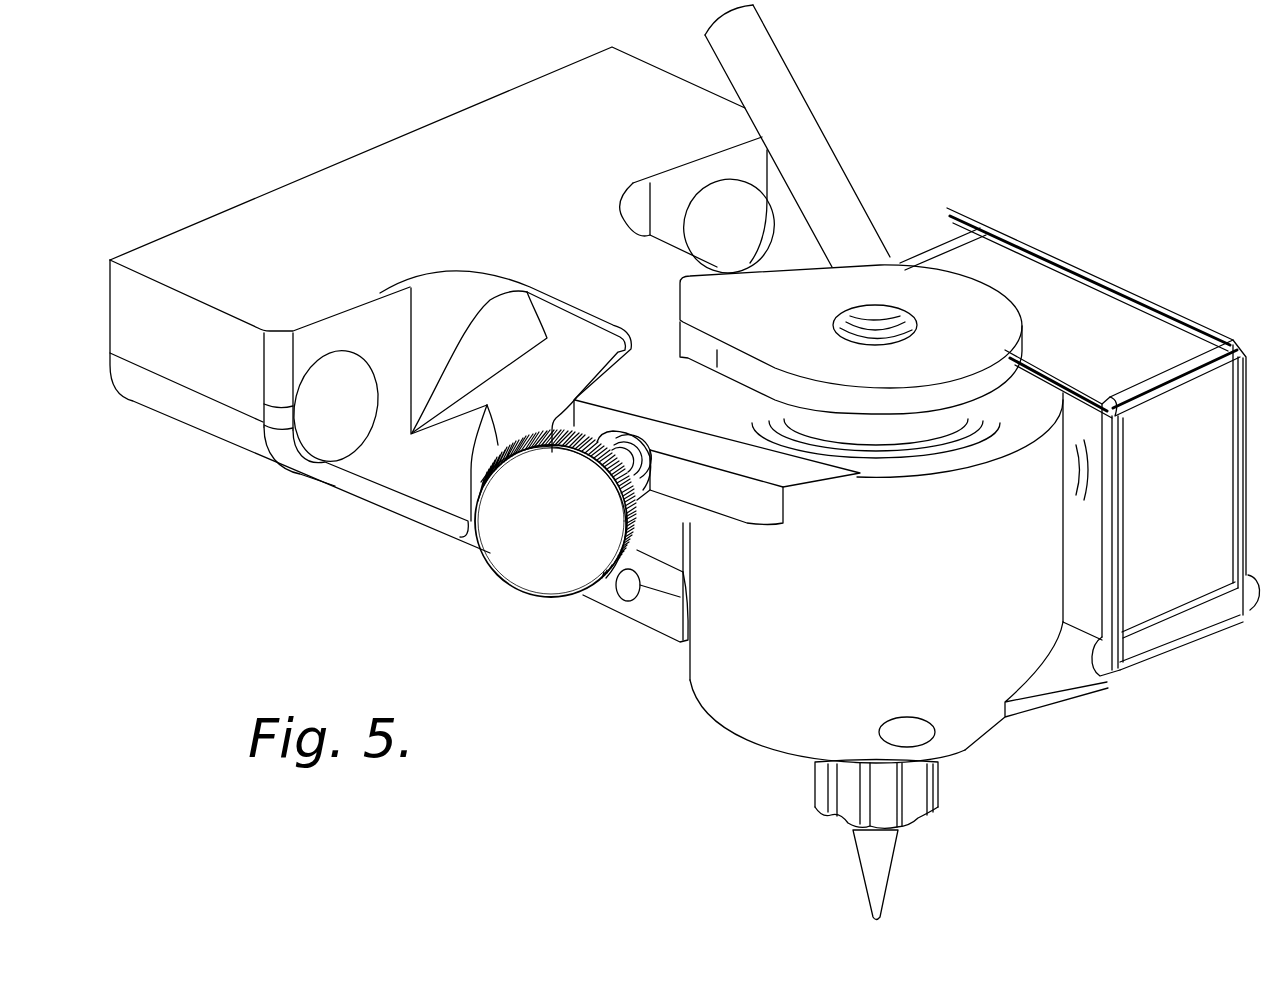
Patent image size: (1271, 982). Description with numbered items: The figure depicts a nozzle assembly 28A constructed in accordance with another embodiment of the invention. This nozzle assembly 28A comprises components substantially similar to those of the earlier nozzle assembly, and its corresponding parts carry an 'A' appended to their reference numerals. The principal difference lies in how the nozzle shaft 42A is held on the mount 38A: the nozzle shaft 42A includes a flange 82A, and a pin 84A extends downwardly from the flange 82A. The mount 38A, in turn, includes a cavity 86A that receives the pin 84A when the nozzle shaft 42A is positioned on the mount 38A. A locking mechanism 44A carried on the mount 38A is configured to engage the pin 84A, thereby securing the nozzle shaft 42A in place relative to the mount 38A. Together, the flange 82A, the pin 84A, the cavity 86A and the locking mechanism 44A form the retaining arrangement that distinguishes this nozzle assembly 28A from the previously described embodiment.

The nozzle assembly 28A is at (1112, 91).
The mount 38A is at (418, 192).
The nozzle shaft 42A is at (1004, 313).
The locking mechanism 44A is at (533, 547).
The flange 82A is at (832, 283).
The pin 84A is at (697, 343).
The cavity 86A is at (706, 364).